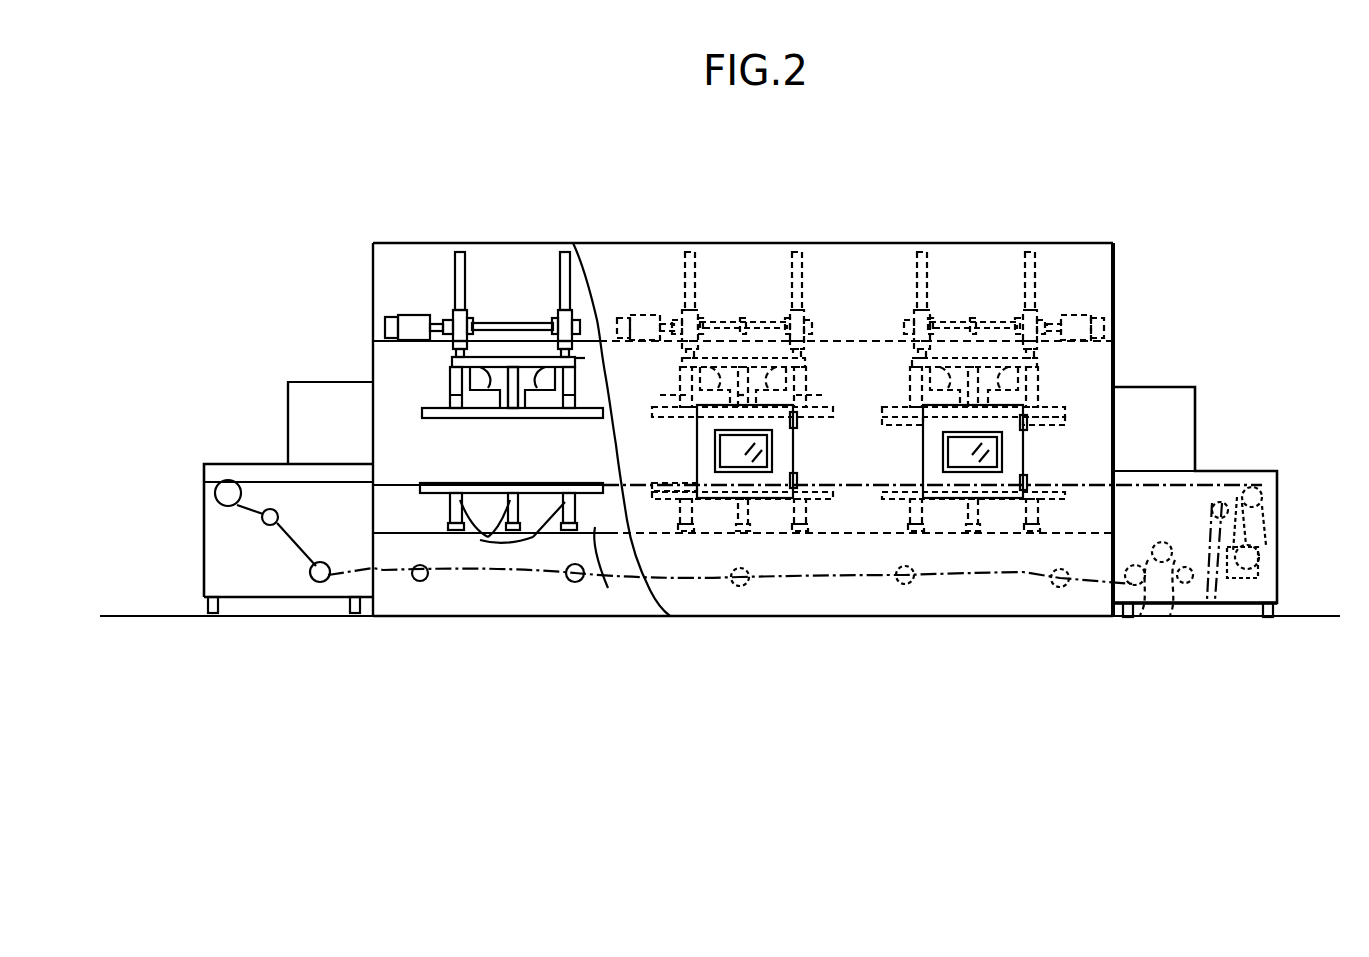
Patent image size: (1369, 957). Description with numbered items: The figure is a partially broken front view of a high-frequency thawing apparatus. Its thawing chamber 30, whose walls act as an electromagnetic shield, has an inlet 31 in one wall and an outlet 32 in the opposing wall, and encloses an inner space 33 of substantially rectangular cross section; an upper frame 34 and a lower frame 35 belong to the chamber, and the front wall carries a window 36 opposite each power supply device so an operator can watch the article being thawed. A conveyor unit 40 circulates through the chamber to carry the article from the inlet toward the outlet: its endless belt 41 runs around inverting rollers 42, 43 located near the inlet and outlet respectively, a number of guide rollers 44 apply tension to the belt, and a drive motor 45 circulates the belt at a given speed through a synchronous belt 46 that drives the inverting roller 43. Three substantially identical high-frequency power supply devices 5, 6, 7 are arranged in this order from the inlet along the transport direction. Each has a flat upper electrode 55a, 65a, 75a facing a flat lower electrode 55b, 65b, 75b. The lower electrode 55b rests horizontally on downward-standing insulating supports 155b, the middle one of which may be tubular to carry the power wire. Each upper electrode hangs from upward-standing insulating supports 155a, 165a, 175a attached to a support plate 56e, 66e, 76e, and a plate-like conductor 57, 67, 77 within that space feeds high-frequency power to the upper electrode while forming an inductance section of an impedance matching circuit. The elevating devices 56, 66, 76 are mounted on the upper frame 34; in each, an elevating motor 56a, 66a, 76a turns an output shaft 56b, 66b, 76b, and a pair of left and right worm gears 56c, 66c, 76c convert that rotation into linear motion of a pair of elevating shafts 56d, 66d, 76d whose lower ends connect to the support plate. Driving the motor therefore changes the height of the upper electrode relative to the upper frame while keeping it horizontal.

The thawing chamber 30 is at (636, 242).
The inlet 31 is at (268, 448).
The outlet 32 is at (1200, 450).
The inner space (interior) 33 is at (365, 432).
The upper frame 34 is at (380, 343).
The lower frame 35 is at (612, 569).
The window 36 is at (767, 455).
The conveyor unit 40 is at (250, 526).
The endless belt 41 is at (466, 577).
The inverting roller 42 is at (218, 491).
The inverting roller 43 is at (1262, 490).
The guide rollers 44 is at (322, 562).
The drive motor 45 is at (1258, 560).
The synchronous belt 46 is at (1262, 517).
The high-frequency power supply device 5 is at (500, 451).
The high-frequency power supply device 6 is at (812, 380).
The high-frequency power supply device 7 is at (1045, 384).
The upper electrode 55a is at (581, 418).
The lower electrode 55b is at (603, 488).
The insulating supports 155a is at (510, 418).
The insulating supports 155b is at (512, 532).
The elevating device 56 is at (438, 292).
The elevating motor 56a is at (408, 292).
The output shaft 56b is at (478, 324).
The worm gears 56c is at (473, 320).
The elevating shafts 56d is at (470, 268).
The support plate 56e is at (580, 360).
The conductor 57 is at (452, 402).
The upper electrode 65a is at (818, 398).
The lower electrode 65b is at (818, 521).
The insulating supports 165a is at (724, 400).
The elevating device 66 is at (714, 254).
The elevating motor 66a is at (678, 310).
The output shaft 66b is at (710, 320).
The worm gears 66c is at (690, 300).
The elevating shafts 66d is at (688, 252).
The support plate 66e is at (730, 324).
The conductor 67 is at (690, 434).
The upper electrode 75a is at (1028, 418).
The lower electrode 75b is at (1040, 519).
The insulating supports 175a is at (818, 378).
The elevating device 76 is at (982, 254).
The elevating motor 76a is at (1075, 327).
The output shaft 76b is at (940, 320).
The worm gears 76c is at (902, 300).
The elevating shafts 76d is at (900, 252).
The support plate 76e is at (960, 324).
The conductor 77 is at (888, 423).